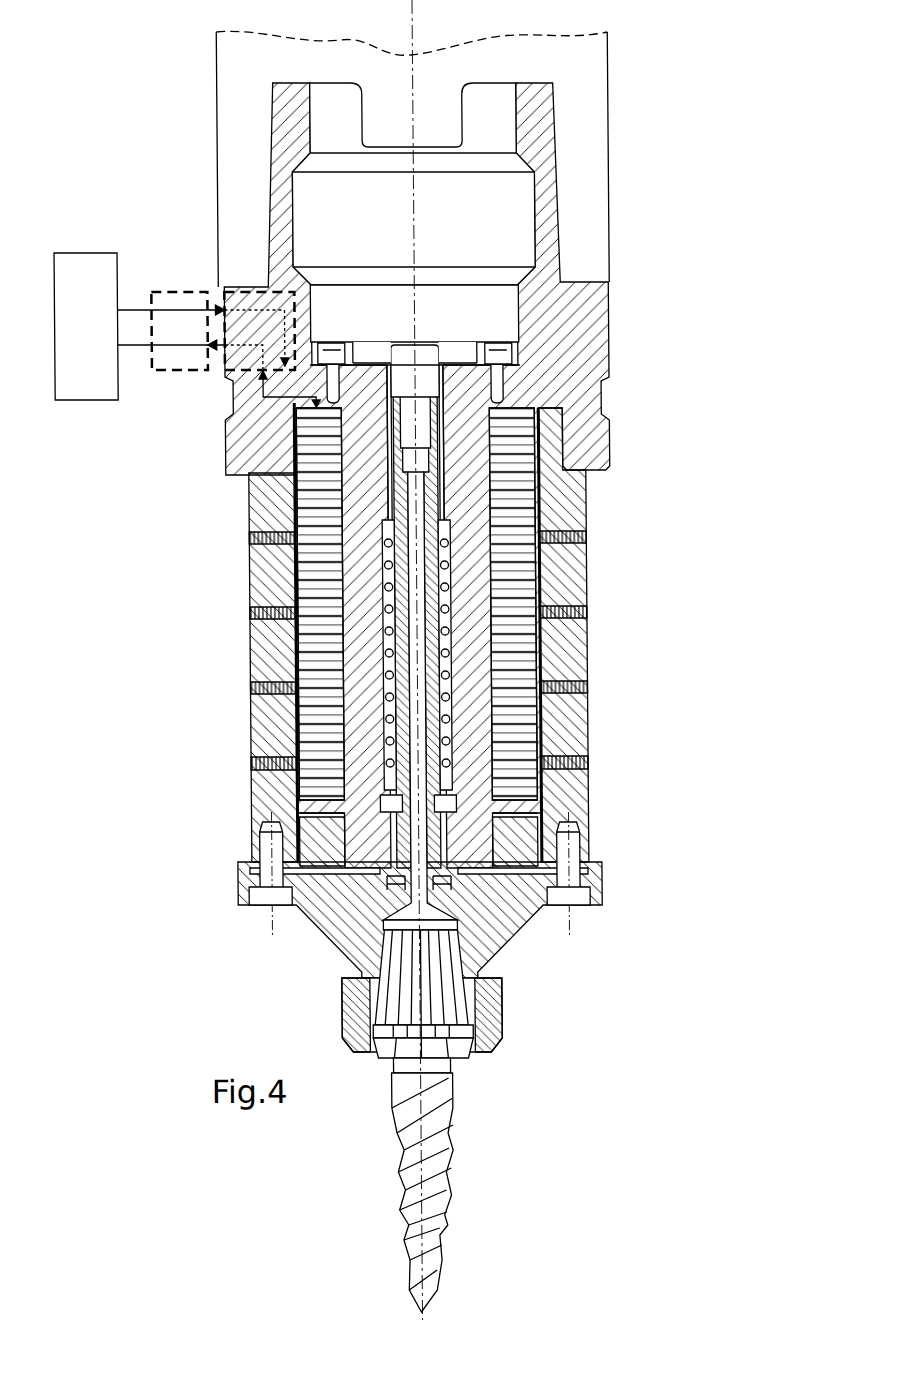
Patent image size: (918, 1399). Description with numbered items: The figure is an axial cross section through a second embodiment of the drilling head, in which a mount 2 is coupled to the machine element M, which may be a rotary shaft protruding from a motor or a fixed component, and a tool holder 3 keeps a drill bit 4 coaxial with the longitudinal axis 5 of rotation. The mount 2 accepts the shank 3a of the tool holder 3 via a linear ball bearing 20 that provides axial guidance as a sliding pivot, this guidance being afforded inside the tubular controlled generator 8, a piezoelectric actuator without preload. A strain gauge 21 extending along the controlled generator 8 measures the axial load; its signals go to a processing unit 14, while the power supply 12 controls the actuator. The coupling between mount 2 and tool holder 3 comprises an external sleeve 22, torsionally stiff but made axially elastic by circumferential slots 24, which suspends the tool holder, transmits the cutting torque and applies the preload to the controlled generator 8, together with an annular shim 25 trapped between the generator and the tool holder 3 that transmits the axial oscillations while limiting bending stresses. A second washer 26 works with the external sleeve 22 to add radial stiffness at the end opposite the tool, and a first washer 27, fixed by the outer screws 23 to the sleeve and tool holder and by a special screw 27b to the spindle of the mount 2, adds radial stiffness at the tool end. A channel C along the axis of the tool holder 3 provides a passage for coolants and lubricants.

The mount 2 is at (581, 330).
The tool holder 3 is at (486, 927).
The shank 3a is at (430, 672).
The drill bit 4 is at (432, 1160).
The longitudinal axis of rotation 5 is at (412, 28).
The controlled generator 8 is at (510, 727).
The power supply 12 is at (259, 290).
The processing unit 14 is at (96, 337).
The linear ball bearing 20 is at (450, 640).
The strain gauge 21 is at (288, 670).
The external sleeve 22 is at (557, 495).
The screws 23 is at (256, 905).
The slots 24 is at (247, 540).
The annular shim 25 is at (556, 803).
The second washer 26 is at (376, 340).
The first washer 27 is at (294, 845).
The special screw 27b is at (321, 842).
The channel C is at (408, 580).
The machine element M is at (589, 95).